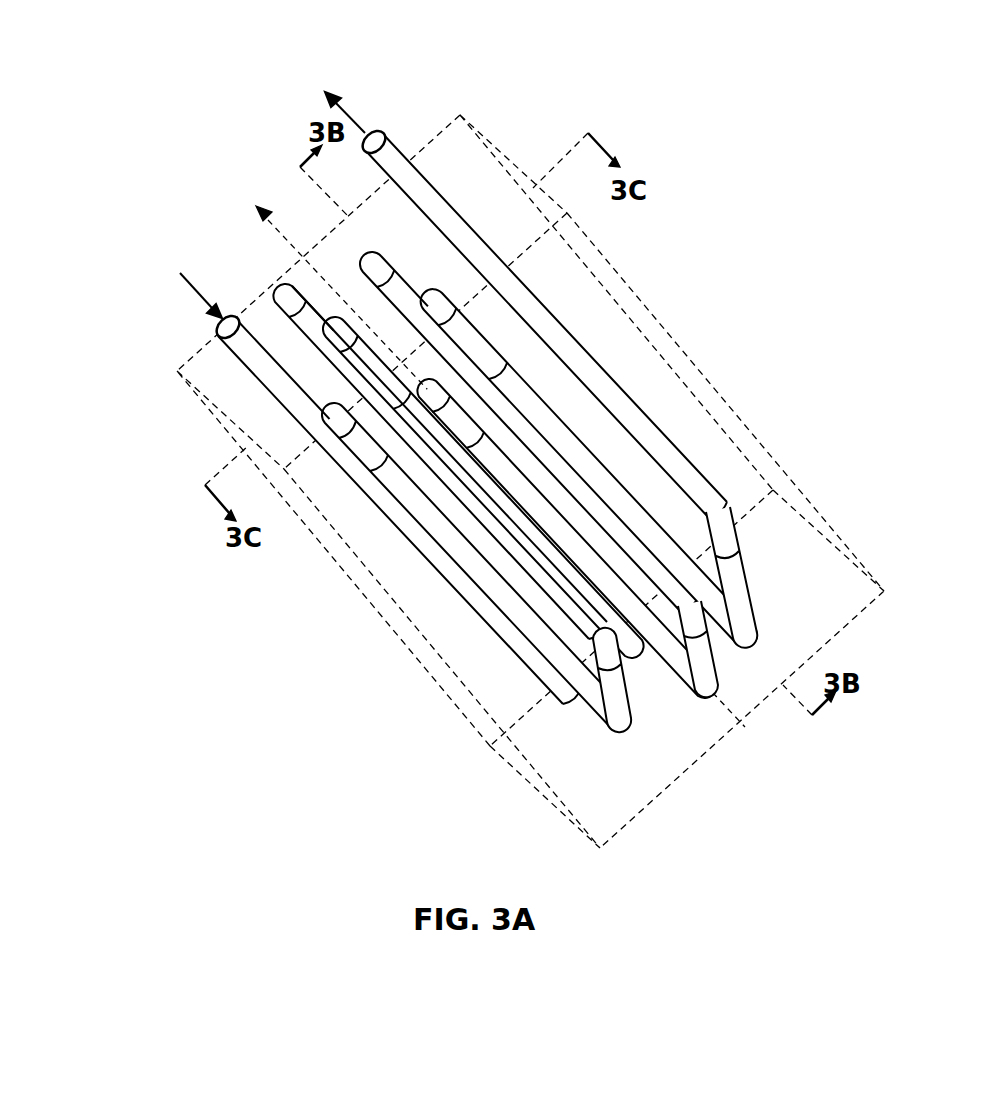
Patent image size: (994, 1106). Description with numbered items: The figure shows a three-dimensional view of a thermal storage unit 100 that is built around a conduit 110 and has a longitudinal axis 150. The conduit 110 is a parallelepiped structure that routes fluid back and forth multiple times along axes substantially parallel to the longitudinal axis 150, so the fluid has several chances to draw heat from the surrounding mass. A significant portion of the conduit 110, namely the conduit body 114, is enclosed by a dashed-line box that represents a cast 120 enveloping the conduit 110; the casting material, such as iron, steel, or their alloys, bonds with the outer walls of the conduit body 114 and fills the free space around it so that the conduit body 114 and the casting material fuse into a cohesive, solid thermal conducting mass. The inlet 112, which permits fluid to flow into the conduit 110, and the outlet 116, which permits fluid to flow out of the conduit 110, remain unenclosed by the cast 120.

The thermal storage unit 100 is at (150, 52).
The conduit 110 is at (448, 538).
The inlet 112 is at (230, 350).
The conduit body 114 is at (550, 654).
The outlet 116 is at (402, 160).
The cast 120 is at (780, 458).
The longitudinal axis 150 is at (292, 246).